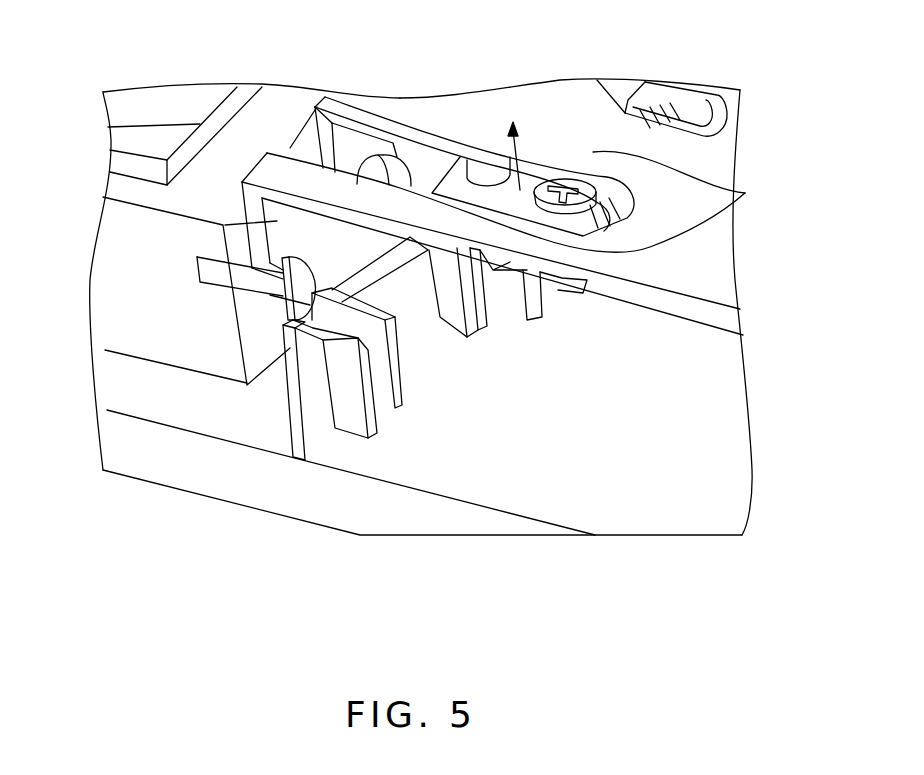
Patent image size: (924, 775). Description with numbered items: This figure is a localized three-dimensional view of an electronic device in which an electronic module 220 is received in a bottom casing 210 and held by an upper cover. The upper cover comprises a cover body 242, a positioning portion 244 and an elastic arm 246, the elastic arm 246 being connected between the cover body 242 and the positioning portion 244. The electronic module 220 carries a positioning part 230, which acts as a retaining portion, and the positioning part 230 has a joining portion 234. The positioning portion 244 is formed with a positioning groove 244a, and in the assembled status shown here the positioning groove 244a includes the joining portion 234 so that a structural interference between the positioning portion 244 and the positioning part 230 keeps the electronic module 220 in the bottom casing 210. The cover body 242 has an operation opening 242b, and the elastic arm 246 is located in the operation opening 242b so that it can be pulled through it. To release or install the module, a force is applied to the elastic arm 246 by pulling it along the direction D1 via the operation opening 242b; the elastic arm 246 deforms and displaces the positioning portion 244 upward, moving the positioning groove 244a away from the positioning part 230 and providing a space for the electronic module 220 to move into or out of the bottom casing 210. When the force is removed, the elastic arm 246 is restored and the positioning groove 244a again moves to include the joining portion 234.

The bottom casing 210 is at (412, 512).
The electronic module 220 is at (108, 280).
The positioning part 230 is at (413, 168).
The joining portion 234 is at (248, 283).
The cover body 242 is at (713, 280).
The operation opening 242b is at (216, 121).
The positioning portion 244 is at (345, 142).
The positioning groove 244a is at (258, 274).
The elastic arm 246 is at (745, 193).
The direction D1 is at (540, 138).